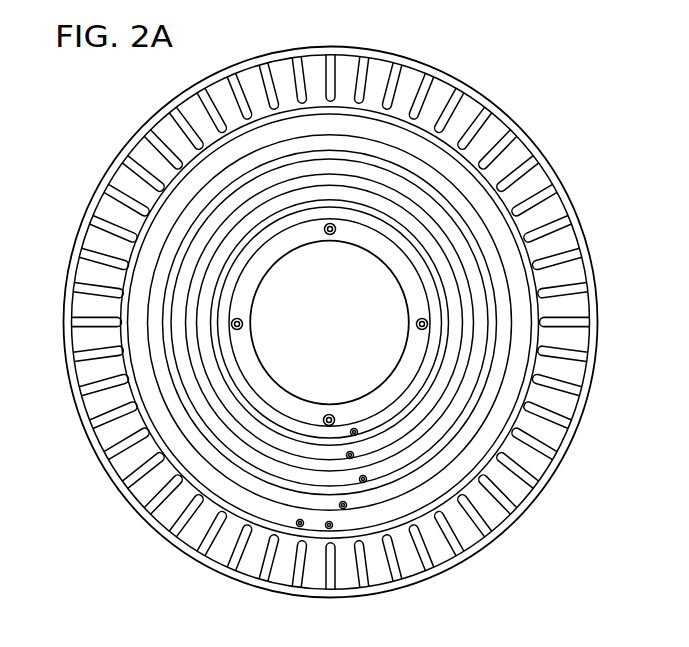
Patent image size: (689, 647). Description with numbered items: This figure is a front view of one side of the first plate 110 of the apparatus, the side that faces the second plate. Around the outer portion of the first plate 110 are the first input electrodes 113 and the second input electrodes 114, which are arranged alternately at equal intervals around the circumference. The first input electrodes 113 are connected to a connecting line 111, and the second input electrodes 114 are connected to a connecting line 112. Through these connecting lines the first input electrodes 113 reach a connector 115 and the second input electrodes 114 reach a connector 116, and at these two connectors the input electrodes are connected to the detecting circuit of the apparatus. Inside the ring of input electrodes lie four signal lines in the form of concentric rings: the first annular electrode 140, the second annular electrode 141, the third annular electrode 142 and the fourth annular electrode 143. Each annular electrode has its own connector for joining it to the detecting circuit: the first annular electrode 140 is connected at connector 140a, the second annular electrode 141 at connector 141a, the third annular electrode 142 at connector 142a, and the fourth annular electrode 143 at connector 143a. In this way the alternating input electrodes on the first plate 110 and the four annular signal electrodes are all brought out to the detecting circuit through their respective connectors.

The first plate 110 is at (568, 276).
The connecting line 111 is at (505, 525).
The connecting line 112 is at (462, 547).
The first input electrode 113 is at (502, 489).
The second input electrode 114 is at (527, 472).
The connector 115 is at (328, 529).
The connector 116 is at (298, 528).
The first annular electrode 140 is at (152, 335).
The connector 140a is at (345, 508).
The second annular electrode 141 is at (187, 387).
The connector 141a is at (366, 482).
The third annular electrode 142 is at (213, 372).
The connector 142a is at (354, 452).
The fourth annular electrode 143 is at (237, 268).
The connector 143a is at (351, 429).